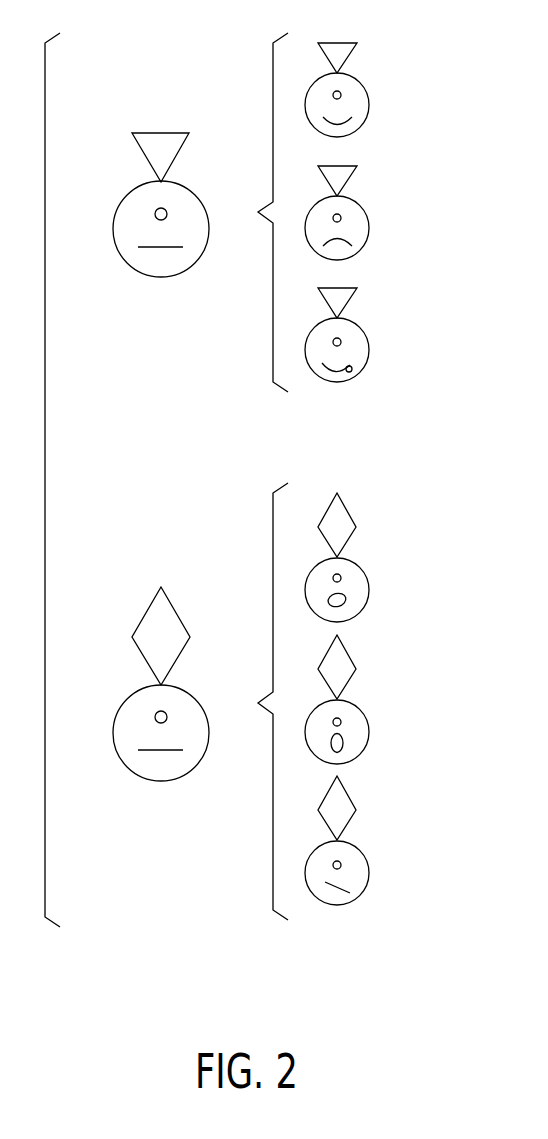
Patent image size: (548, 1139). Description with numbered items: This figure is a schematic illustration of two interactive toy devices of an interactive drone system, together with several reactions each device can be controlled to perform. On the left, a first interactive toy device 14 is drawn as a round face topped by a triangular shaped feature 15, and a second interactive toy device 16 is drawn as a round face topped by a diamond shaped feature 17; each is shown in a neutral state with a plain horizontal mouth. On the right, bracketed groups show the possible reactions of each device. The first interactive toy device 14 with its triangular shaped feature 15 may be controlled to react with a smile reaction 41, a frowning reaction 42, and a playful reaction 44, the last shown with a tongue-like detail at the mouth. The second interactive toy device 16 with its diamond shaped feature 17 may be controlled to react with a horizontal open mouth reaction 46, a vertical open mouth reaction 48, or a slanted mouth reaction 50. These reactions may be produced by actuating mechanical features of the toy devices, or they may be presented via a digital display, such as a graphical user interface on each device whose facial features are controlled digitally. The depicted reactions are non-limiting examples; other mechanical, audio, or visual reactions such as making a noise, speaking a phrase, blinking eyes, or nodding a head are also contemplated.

The first interactive toy device 14 is at (118, 192).
The triangular shaped feature 15 is at (163, 131).
The second interactive toy device 16 is at (118, 697).
The diamond shaped feature 17 is at (175, 612).
The smile reaction 41 is at (360, 112).
The frowning reaction 42 is at (359, 235).
The playful reaction 44 is at (360, 358).
The horizontal open mouth reaction 46 is at (329, 606).
The vertical open mouth reaction 48 is at (326, 750).
The slanted mouth reaction 50 is at (327, 887).